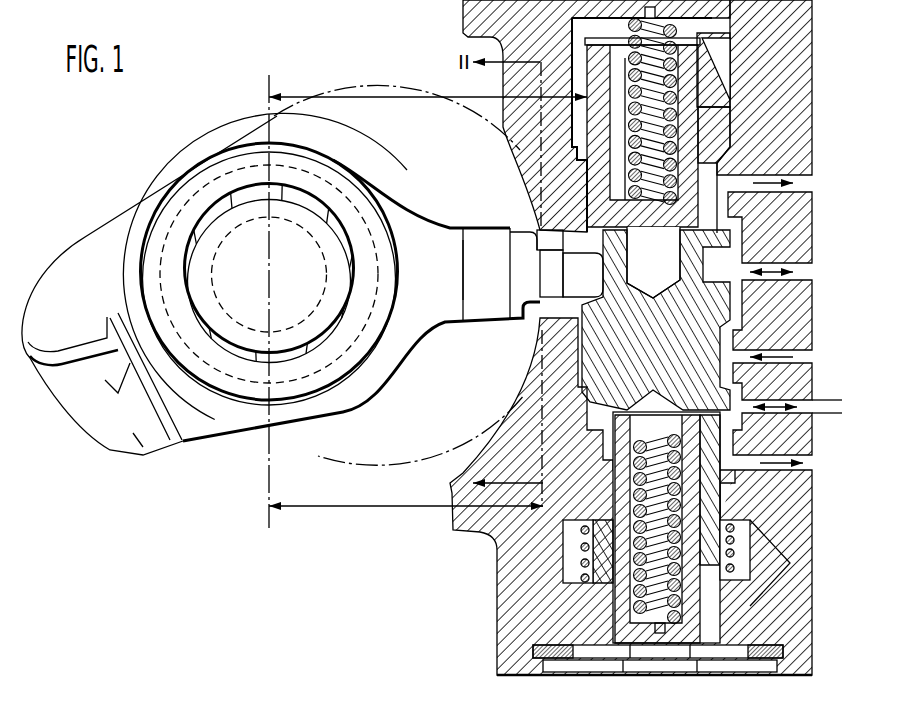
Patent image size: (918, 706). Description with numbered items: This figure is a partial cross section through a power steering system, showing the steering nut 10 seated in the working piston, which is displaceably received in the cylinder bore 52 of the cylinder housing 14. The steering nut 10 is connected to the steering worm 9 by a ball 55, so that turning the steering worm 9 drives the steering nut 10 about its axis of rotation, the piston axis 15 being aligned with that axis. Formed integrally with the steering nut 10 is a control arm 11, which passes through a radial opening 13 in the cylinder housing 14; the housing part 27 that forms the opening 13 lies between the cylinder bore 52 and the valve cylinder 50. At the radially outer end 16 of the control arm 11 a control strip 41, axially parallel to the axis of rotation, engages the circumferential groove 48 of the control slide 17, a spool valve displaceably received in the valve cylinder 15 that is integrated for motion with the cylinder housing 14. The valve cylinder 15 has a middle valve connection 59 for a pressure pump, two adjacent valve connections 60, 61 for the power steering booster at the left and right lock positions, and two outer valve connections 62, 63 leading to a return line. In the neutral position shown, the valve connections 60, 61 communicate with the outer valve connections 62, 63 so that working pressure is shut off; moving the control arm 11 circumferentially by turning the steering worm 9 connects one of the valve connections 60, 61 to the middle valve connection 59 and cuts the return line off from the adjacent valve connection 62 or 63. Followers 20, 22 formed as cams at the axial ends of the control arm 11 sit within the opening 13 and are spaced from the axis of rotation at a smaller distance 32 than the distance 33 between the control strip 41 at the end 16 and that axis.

The steering worm 9 is at (247, 237).
The steering nut 10 is at (130, 217).
The control arm 11 is at (475, 227).
The radial opening 13 is at (573, 303).
The cylinder housing 14 is at (490, 618).
The valve cylinder 15 is at (208, 301).
The radially outer end 16 is at (598, 278).
The control slide 17 is at (710, 33).
The follower 20 is at (575, 244).
The follower 22 is at (528, 318).
The housing part 27 is at (530, 206).
The distance 32 is at (350, 510).
The distance 33 is at (342, 96).
The control strip 41 is at (604, 279).
The circumferential groove 48 is at (705, 281).
The valve cylinder 50 is at (582, 373).
The cylinder bore 52 is at (513, 400).
The ball 55 is at (340, 214).
The middle valve connection 59 is at (807, 355).
The valve connection 60 is at (827, 403).
The valve connection 61 is at (807, 273).
The outer valve connection 62 is at (805, 458).
The outer valve connection 63 is at (798, 184).